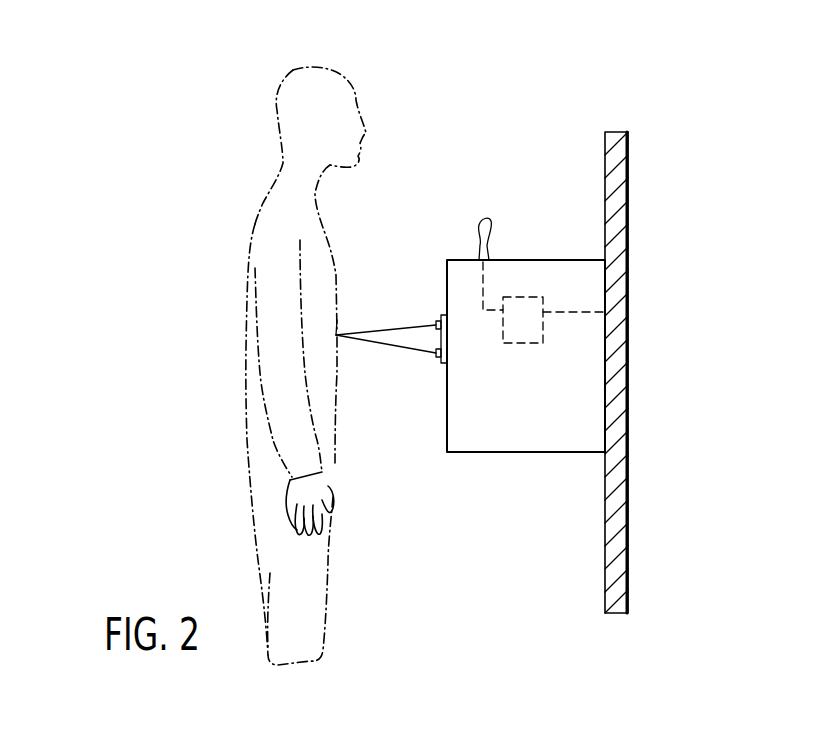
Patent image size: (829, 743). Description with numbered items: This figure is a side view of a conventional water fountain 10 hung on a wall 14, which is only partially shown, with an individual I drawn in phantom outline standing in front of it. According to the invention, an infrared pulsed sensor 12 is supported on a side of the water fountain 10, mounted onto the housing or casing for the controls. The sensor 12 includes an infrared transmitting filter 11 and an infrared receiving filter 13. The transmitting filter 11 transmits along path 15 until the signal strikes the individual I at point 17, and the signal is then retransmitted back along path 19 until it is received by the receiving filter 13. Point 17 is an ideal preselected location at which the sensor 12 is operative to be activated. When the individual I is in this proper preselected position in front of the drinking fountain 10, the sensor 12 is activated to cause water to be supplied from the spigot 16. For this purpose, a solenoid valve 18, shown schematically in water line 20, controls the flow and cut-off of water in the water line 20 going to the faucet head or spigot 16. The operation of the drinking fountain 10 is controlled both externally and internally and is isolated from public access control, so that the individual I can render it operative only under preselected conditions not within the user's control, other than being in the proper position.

The individual I is at (255, 223).
The water fountain 10 is at (537, 428).
The infrared transmitting filter 11 is at (436, 323).
The infrared pulsed sensor 12 is at (443, 367).
The infrared receiving filter 13 is at (436, 353).
The wall 14 is at (618, 517).
The path 15 is at (378, 330).
The spigot 16 is at (485, 213).
The point 17 is at (338, 318).
The solenoid valve 18 is at (525, 310).
The path 19 is at (378, 342).
The water line 20 is at (577, 312).